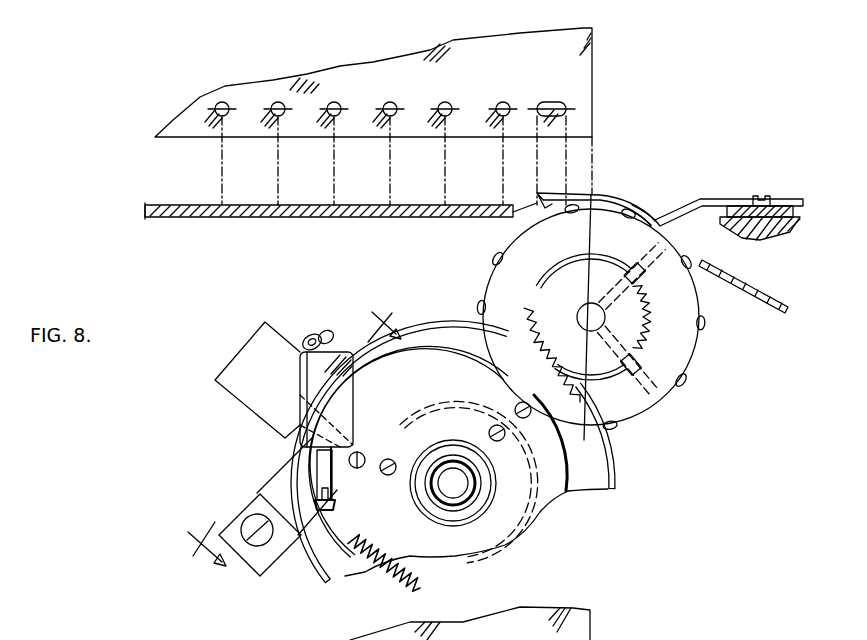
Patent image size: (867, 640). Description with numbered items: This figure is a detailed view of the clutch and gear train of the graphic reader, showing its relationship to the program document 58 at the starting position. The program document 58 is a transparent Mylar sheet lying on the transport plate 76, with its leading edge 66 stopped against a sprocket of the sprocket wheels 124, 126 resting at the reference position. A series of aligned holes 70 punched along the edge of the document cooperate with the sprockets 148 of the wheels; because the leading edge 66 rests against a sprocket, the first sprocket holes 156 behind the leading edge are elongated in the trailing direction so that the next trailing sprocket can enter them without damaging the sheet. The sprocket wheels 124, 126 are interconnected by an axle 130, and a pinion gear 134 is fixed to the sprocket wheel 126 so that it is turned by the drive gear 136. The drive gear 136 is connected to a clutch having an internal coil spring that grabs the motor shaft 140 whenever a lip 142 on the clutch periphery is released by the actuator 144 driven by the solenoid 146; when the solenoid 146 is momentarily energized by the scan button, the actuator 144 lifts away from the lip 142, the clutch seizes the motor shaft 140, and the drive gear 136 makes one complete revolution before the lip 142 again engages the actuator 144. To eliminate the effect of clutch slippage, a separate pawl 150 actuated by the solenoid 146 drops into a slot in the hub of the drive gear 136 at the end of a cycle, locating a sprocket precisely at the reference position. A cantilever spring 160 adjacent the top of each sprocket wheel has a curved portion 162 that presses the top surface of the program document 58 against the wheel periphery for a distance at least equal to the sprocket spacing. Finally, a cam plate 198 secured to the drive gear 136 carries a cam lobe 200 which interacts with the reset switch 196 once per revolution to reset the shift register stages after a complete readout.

The program document 58 is at (182, 205).
The leading edge 66 is at (592, 86).
The aligned holes 70 is at (500, 102).
The transport plate 76 is at (235, 217).
The sprocket wheel 124 is at (785, 231).
The sprocket wheel 126 is at (698, 352).
The axle 130 is at (591, 303).
The pinion gear 134 is at (651, 313).
The drive gear 136 is at (605, 448).
The motor shaft 140 is at (483, 483).
The lip 142 is at (384, 420).
The actuator 144 is at (356, 390).
The solenoid 146 is at (246, 355).
The sprockets 148 is at (598, 198).
The pawl 150 is at (385, 458).
The sprocket holes 156 is at (551, 102).
The cantilever spring 160 is at (690, 199).
The curved portion 162 is at (636, 208).
The reset switch 196 is at (340, 352).
The cam plate 198 is at (568, 492).
The cam lobe 200 is at (306, 476).